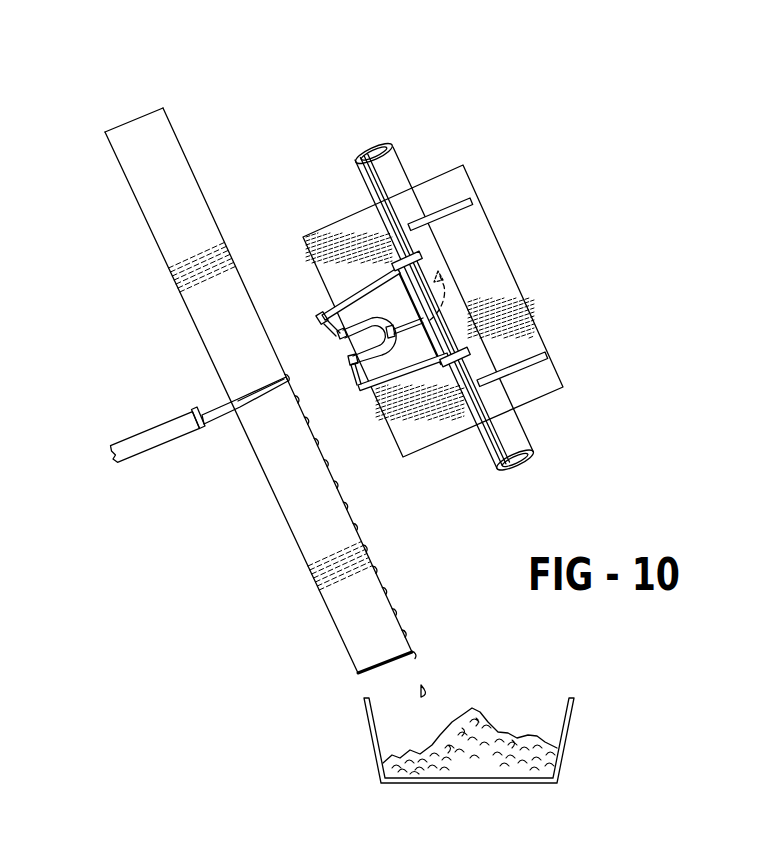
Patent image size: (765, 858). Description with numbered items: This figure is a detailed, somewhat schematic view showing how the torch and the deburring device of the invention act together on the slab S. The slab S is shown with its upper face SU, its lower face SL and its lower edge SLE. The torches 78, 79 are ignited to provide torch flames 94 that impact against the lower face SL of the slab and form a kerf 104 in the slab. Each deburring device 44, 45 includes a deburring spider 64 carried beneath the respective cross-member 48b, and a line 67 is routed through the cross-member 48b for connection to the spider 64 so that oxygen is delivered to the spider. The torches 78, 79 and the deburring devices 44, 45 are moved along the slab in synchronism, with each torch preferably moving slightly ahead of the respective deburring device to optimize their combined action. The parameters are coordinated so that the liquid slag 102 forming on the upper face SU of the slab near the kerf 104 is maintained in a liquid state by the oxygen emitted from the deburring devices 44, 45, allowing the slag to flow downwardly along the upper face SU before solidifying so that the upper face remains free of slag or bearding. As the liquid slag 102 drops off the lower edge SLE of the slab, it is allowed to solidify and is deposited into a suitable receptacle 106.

The slab S is at (226, 390).
The upper face of the slab SU is at (203, 194).
The lower face of the slab SL is at (152, 233).
The lower edge of the slab SLE is at (346, 679).
The deburring device 44 is at (409, 303).
The deburring device 45 is at (519, 214).
The cross-member 48b is at (422, 303).
The deburring spider 64 is at (350, 377).
The line 67 is at (452, 274).
The torch 78 is at (158, 477).
The torch 79 is at (157, 443).
The torch flame 94 is at (216, 383).
The liquid slag 102 is at (290, 376).
The kerf 104 is at (273, 386).
The receptacle 106 is at (366, 722).